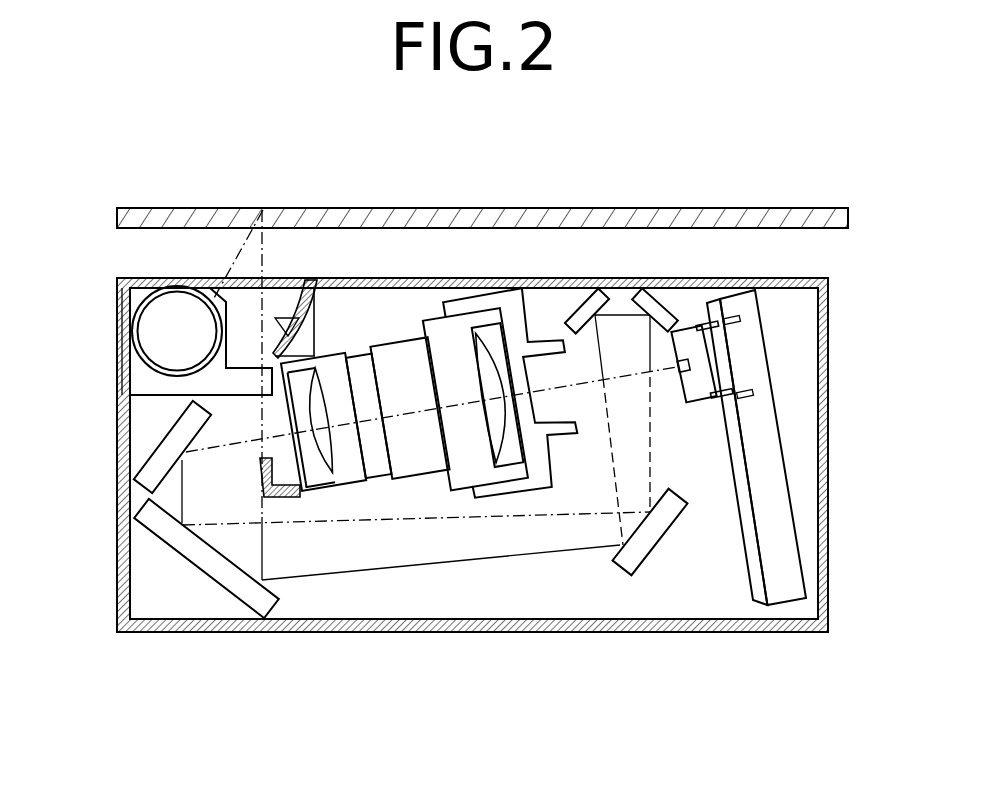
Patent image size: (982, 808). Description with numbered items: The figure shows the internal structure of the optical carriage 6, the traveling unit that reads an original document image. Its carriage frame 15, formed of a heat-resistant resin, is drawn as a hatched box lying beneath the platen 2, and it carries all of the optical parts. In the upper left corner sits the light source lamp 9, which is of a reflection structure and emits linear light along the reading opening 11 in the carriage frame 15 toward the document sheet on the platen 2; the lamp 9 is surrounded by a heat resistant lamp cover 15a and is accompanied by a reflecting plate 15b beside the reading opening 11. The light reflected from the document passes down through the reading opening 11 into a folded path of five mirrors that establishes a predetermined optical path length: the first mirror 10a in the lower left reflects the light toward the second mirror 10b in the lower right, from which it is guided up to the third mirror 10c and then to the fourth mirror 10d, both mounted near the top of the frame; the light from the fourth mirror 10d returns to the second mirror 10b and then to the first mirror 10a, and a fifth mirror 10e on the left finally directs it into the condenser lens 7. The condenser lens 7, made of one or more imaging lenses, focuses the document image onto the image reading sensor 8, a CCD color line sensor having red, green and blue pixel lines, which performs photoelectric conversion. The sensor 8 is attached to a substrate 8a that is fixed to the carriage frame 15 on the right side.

The platen 2 is at (693, 213).
The optical carriage 6 is at (259, 651).
The condenser lens 7 is at (462, 322).
The image reading sensor 8 is at (688, 330).
The substrate 8a is at (723, 313).
The light source lamp 9 is at (163, 336).
The first mirror 10a is at (178, 538).
The second mirror 10b is at (638, 552).
The third mirror 10c is at (580, 305).
The fourth mirror 10d is at (657, 308).
The fifth mirror 10e is at (165, 438).
The reading opening 11 is at (267, 298).
The carriage frame 15 is at (118, 423).
The heat resistant lamp cover 15a is at (118, 318).
The reflecting plate 15b is at (311, 313).